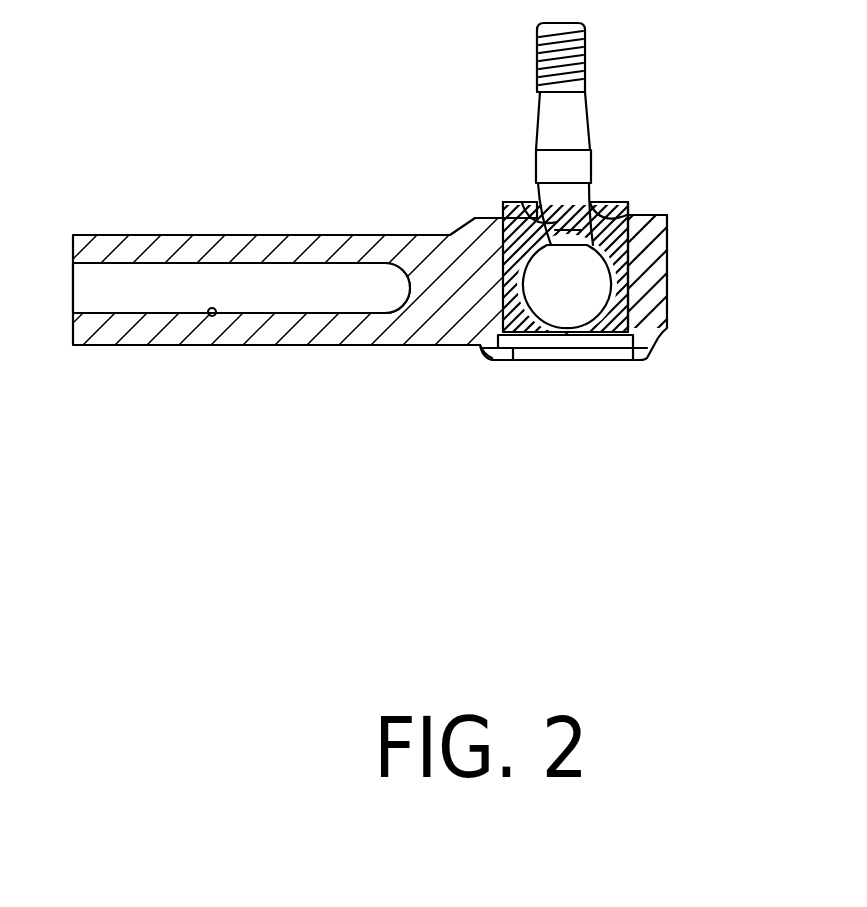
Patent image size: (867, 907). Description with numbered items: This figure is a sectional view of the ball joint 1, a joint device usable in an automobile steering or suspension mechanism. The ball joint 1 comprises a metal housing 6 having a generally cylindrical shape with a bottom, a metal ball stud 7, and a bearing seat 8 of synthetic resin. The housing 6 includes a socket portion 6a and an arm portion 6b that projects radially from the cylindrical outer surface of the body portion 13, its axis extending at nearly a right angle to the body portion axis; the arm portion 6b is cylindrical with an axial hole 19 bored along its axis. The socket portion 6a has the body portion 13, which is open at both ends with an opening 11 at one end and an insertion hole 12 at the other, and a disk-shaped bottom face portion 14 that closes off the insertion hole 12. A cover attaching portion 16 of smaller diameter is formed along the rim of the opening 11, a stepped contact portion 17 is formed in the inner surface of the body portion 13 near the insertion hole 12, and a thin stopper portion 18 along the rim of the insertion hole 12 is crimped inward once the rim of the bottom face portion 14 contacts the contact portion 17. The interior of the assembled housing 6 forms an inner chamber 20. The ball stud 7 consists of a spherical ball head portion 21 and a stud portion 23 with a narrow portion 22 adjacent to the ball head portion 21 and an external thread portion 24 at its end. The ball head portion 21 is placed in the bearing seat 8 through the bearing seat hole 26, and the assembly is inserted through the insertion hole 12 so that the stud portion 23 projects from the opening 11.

The ball joint 1 is at (398, 400).
The housing 6 is at (668, 307).
The socket portion 6a is at (668, 328).
The arm portion 6b is at (267, 233).
The ball stud 7 is at (593, 120).
The bearing seat 8 is at (668, 243).
The opening 11 is at (593, 200).
The insertion hole 12 is at (603, 348).
The body portion 13 is at (655, 277).
The bottom face portion 14 is at (540, 340).
The cover attaching portion 16 is at (628, 205).
The contact portion 17 is at (637, 357).
The stopper portion 18 is at (612, 348).
The axial hole 19 is at (212, 315).
The inner chamber 20 is at (480, 348).
The ball head portion 21 is at (545, 290).
The narrow portion 22 is at (528, 203).
The stud portion 23 is at (533, 125).
The external thread portion 24 is at (588, 48).
The bearing seat hole 26 is at (640, 209).